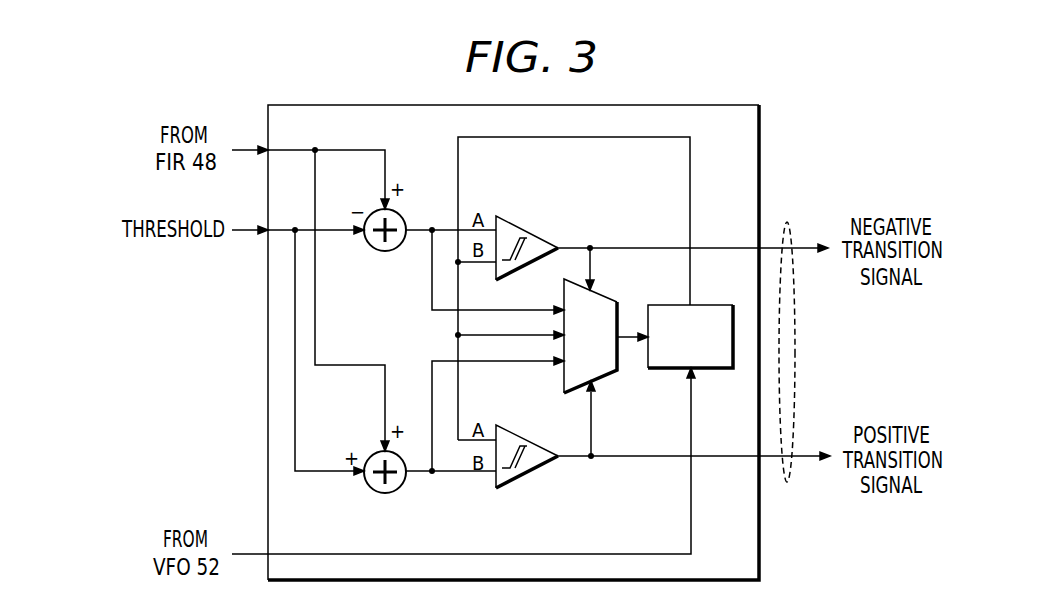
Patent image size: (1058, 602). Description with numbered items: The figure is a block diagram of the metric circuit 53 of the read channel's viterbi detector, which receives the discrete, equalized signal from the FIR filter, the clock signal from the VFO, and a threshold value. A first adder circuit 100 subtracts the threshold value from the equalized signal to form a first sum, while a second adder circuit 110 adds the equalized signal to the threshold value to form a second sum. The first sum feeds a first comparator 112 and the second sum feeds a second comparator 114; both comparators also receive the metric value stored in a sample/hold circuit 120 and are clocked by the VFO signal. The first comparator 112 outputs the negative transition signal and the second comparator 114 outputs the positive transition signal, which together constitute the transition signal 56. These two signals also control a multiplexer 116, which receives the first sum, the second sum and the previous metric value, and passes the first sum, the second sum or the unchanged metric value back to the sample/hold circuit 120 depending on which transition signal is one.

The metric circuit 53 is at (748, 72).
The first adder circuit 100 is at (385, 251).
The second adder circuit 110 is at (385, 493).
The first comparator 112 is at (540, 236).
The second comparator 114 is at (537, 470).
The multiplexer 116 is at (562, 383).
The sample/hold circuit 120 is at (728, 368).
The transition signal 56 is at (786, 222).